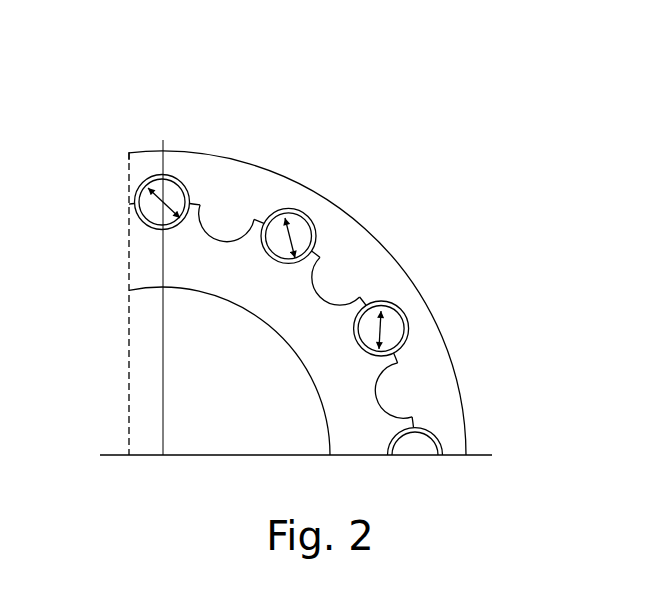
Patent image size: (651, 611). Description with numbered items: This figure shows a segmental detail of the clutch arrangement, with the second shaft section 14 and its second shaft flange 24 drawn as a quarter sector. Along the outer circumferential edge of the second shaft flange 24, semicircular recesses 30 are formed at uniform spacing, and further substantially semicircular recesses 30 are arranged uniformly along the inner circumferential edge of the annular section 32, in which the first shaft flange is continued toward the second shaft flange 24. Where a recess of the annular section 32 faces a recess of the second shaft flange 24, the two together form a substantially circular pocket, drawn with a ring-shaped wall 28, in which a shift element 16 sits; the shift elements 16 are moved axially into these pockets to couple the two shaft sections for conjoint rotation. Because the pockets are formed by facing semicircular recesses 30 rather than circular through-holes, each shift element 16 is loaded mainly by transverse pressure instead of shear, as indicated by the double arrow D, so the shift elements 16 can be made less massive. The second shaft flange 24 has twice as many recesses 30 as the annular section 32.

The second shaft section 14 is at (228, 412).
The shift element 16 is at (153, 183).
The second shaft flange 24 is at (190, 275).
The hole walls / rings 28 is at (162, 175).
The semicircular recess 30 is at (227, 222).
The annular section 32 is at (217, 172).
The double arrow D is at (174, 186).